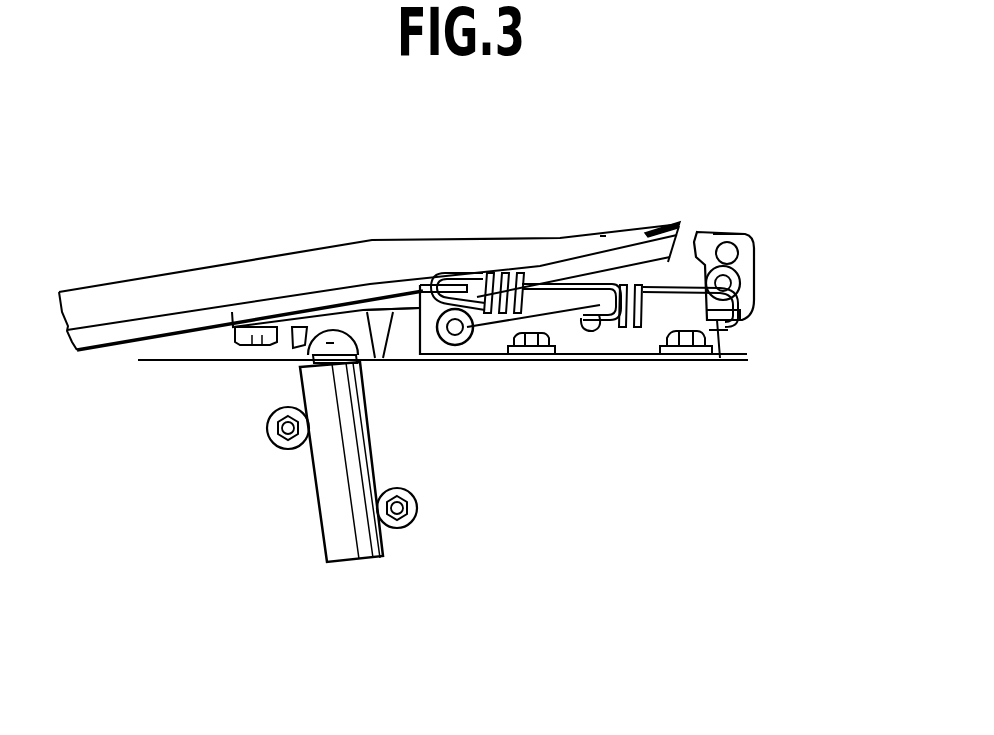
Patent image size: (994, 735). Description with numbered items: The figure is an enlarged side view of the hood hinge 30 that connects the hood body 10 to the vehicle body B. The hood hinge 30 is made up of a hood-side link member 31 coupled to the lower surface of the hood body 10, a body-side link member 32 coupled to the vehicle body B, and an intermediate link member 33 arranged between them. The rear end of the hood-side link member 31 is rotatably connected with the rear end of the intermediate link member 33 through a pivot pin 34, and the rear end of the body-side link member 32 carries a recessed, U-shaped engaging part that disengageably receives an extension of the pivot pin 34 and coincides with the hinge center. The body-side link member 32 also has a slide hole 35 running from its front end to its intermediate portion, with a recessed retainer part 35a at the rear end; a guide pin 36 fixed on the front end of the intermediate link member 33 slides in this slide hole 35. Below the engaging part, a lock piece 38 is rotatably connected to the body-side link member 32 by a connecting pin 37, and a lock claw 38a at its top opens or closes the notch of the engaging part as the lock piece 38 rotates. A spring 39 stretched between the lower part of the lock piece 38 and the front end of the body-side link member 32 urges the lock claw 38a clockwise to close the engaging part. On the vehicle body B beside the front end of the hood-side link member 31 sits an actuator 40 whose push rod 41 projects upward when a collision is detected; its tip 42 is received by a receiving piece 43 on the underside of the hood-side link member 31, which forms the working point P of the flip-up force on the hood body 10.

The hood body 10 is at (165, 275).
The working point P is at (330, 345).
The hood hinge 30 is at (604, 232).
The hood-side link member 31 is at (400, 300).
The body-side link member 32 is at (627, 338).
The intermediate link member 33 is at (645, 233).
The pivot pin 34 is at (755, 259).
The slide hole 35 is at (493, 313).
The retainer part 35a is at (585, 332).
The guide pin 36 is at (453, 348).
The connecting pin 37 is at (754, 305).
The lock piece 38 is at (693, 232).
The lock claw 38a is at (713, 233).
The spring 39 is at (513, 267).
The actuator 40 is at (312, 527).
The push rod 41 is at (307, 440).
The tip 42 is at (320, 342).
The receiving piece 43 is at (366, 330).
The vehicle body B is at (197, 360).